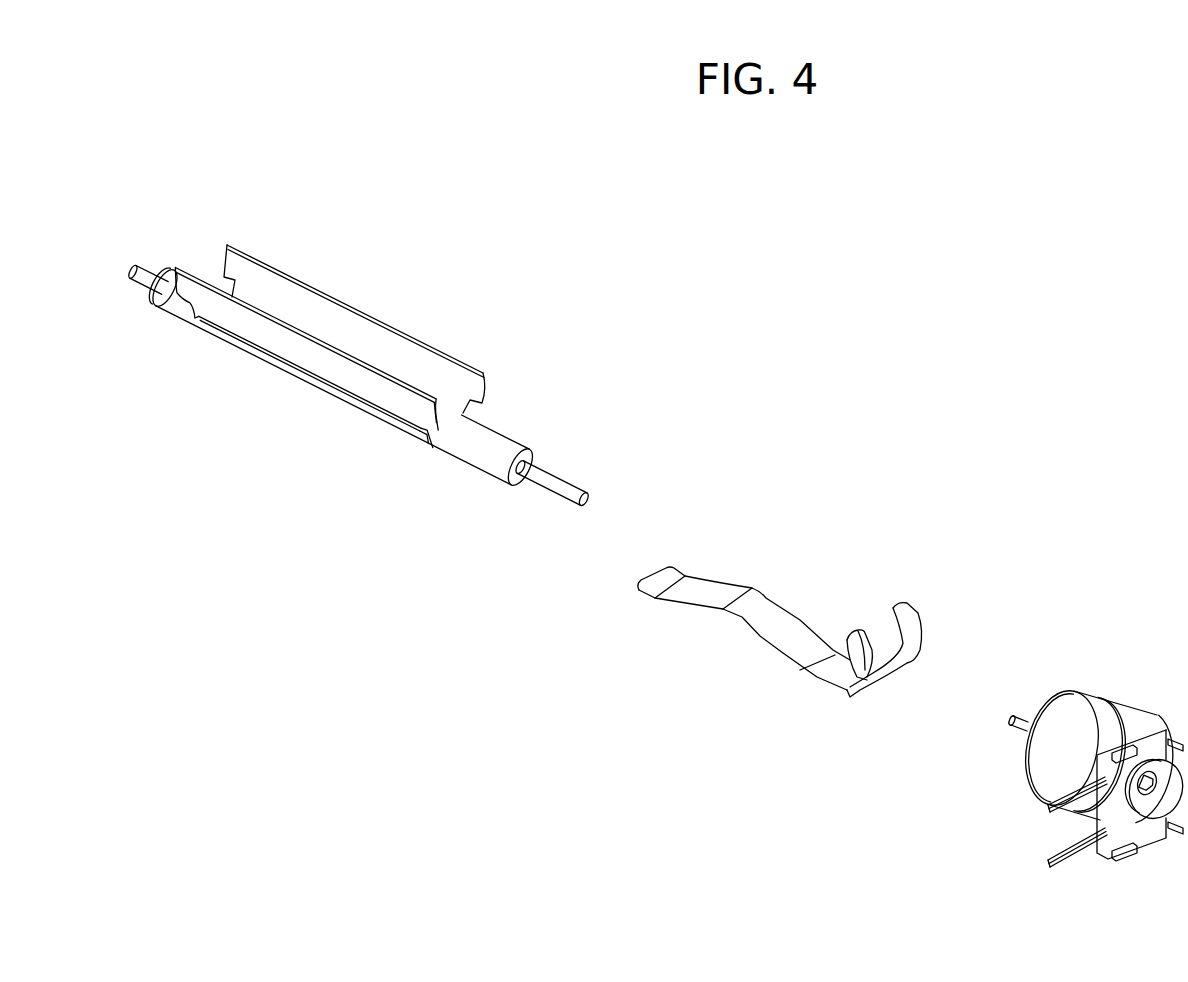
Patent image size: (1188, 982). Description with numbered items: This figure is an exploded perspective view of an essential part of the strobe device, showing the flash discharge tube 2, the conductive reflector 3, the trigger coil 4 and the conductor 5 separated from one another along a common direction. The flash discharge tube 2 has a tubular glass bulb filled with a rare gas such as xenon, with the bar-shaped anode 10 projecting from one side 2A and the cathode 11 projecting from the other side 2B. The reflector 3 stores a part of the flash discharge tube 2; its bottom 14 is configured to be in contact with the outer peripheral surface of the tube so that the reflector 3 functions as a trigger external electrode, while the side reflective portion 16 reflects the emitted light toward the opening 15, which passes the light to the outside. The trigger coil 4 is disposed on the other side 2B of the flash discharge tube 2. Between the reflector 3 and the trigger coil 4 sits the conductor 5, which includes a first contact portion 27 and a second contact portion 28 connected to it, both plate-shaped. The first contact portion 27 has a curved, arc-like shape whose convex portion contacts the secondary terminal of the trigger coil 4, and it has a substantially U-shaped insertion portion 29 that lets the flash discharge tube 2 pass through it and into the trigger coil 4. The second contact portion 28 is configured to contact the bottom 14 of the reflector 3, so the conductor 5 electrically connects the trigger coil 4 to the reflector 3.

The flash discharge tube 2 is at (364, 369).
The one side 2A is at (168, 300).
The other side 2B is at (503, 443).
The conductive reflector 3 is at (353, 304).
The trigger coil 4 is at (1122, 690).
The conductor 5 is at (794, 587).
The anode 10 is at (143, 276).
The cathode 11 is at (557, 483).
The bottom 14 is at (322, 392).
The opening 15 is at (280, 300).
The side reflective portion 16 is at (307, 284).
The first contact portion 27 is at (893, 620).
The second contact portion 28 is at (768, 622).
The insertion portion 29 is at (885, 640).